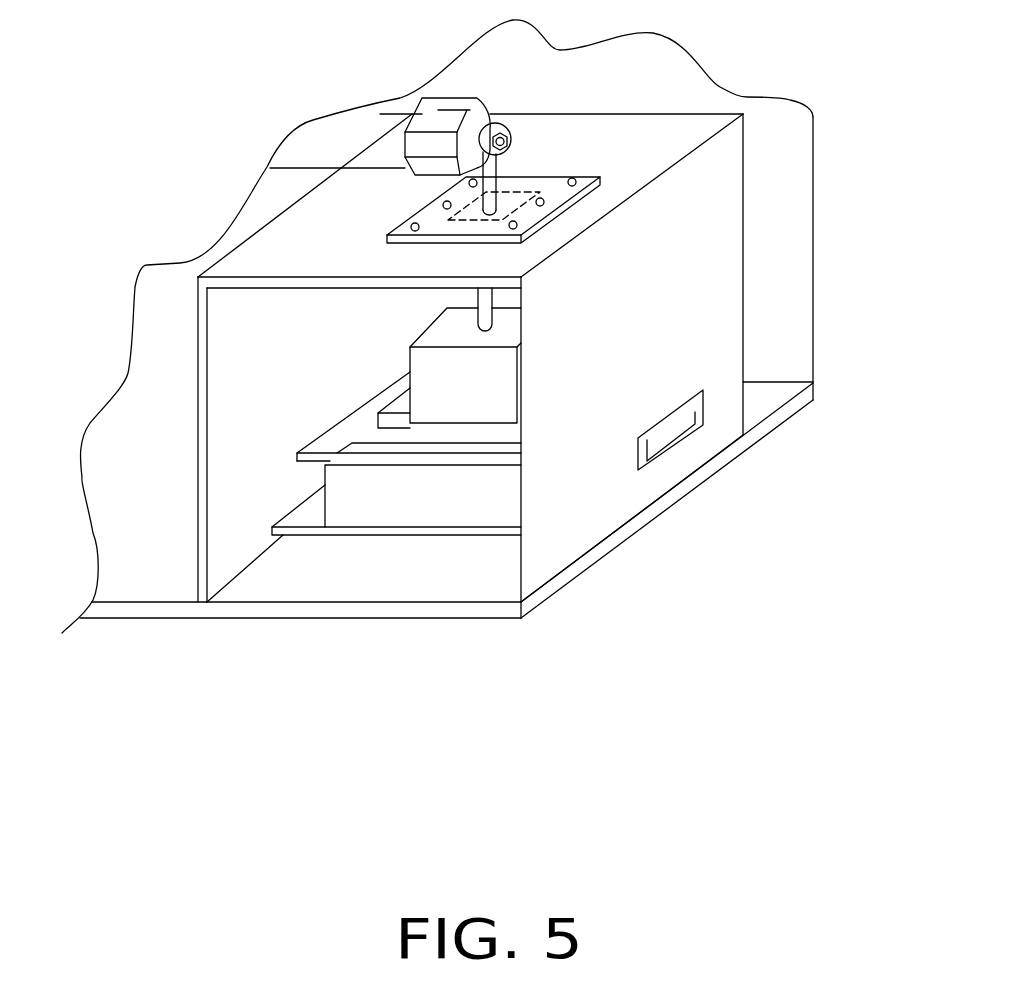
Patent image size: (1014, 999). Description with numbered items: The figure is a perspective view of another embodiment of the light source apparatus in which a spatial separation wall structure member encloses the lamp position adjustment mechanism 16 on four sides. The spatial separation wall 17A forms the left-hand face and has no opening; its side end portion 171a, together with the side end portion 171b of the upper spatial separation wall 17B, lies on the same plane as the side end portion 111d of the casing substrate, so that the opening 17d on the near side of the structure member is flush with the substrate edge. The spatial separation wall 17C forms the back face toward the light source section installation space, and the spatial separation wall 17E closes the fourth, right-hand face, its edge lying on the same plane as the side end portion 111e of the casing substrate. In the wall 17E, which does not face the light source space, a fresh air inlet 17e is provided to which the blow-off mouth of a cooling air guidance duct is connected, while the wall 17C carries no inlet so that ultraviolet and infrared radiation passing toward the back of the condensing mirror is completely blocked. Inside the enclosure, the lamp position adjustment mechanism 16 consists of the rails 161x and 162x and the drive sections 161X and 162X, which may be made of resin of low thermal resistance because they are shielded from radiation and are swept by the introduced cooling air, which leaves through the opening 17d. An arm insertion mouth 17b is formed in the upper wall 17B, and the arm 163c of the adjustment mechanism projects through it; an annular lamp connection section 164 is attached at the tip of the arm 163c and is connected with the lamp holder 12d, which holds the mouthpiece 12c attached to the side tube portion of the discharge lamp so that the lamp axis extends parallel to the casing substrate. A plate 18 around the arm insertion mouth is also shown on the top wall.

The mouthpiece 12c is at (362, 125).
The lamp holder 12d is at (452, 100).
The annular lamp connection section 164 is at (490, 118).
The spatial separation wall 17B is at (673, 128).
The arm 163c is at (497, 183).
The mounting plate 18 is at (557, 192).
The arm insertion mouth 17b is at (530, 203).
The spatial separation wall 17C is at (742, 210).
The spatial separation wall 17E is at (727, 272).
The side end portion 171b is at (325, 283).
The lamp position adjustment mechanism 16 is at (423, 308).
The drive section 162X is at (423, 368).
The rail 162x is at (407, 400).
The opening 17d is at (256, 499).
The side end portion 171a is at (203, 473).
The spatial separation wall 17A is at (230, 530).
The drive section 161X is at (322, 443).
The rail 161x is at (452, 458).
The fresh air inlet 17e is at (673, 427).
The side end portion 111e is at (660, 507).
The side end portion 111d is at (369, 612).